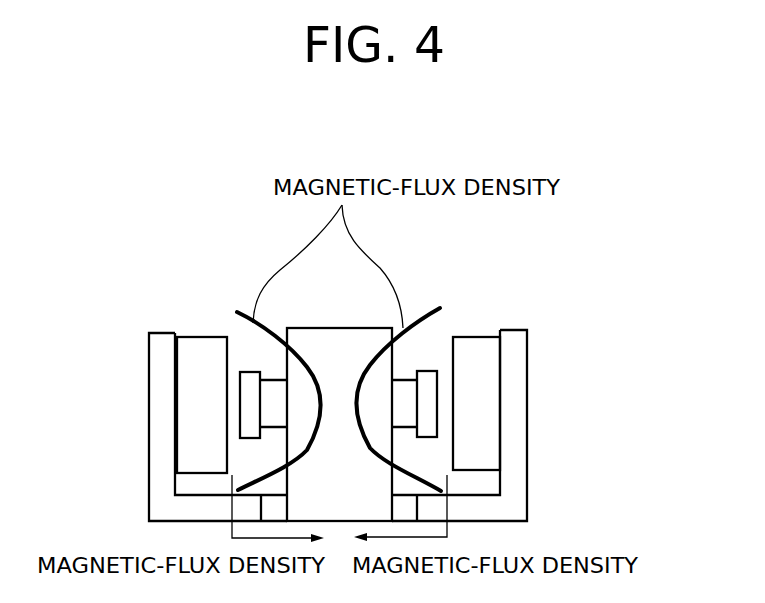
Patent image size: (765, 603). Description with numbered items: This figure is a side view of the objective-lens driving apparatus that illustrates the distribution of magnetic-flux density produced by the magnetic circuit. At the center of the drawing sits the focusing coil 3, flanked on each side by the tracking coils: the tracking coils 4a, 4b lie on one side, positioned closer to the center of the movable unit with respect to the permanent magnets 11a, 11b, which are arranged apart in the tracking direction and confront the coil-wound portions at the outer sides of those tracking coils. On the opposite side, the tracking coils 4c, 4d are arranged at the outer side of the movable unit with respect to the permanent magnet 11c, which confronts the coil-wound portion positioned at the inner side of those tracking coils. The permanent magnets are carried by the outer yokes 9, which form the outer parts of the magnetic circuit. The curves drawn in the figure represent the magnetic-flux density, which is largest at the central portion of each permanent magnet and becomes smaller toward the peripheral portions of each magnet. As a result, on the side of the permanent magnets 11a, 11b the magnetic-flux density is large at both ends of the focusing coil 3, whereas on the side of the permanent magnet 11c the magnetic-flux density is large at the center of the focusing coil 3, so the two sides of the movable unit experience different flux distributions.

The focusing coil 3 is at (402, 410).
The tracking coil 4a is at (473, 328).
The tracking coil 4b is at (427, 375).
The tracking coil 4c is at (206, 330).
The tracking coil 4d is at (248, 370).
The outer yoke 9 is at (520, 354).
The permanent magnet 11a is at (555, 359).
The permanent magnet 11b is at (477, 347).
The permanent magnet 11c is at (193, 360).